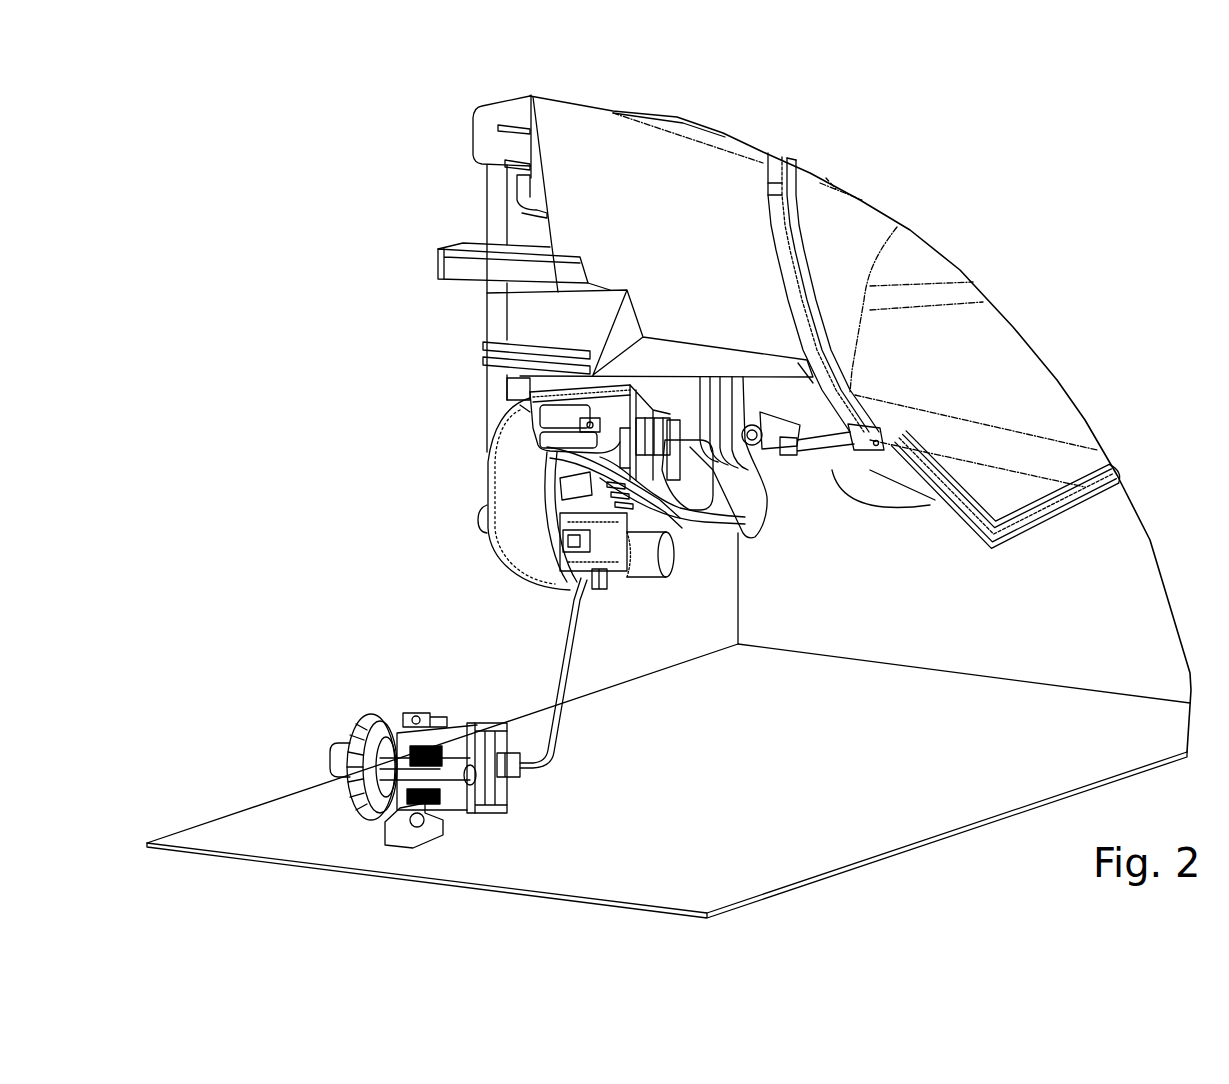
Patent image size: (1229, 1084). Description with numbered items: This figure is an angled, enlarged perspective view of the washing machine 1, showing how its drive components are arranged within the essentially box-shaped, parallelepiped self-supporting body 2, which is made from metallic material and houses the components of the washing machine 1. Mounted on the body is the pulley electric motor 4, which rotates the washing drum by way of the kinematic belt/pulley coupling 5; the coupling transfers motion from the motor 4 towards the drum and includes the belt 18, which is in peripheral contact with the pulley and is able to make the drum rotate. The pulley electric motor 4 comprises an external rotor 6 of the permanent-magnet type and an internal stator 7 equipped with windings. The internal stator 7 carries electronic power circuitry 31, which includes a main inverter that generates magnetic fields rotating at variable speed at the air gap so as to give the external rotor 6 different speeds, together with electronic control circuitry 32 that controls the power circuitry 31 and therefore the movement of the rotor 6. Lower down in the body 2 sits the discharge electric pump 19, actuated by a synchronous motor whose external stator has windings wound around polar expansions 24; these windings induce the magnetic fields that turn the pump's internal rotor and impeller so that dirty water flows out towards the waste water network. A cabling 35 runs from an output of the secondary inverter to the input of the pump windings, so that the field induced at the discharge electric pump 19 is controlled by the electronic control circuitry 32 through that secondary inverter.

The washing machine 1 is at (1000, 216).
The self-supporting body 2 is at (247, 820).
The pulley electric motor 4 is at (467, 541).
The kinematic belt/pulley coupling 5 is at (467, 392).
The external rotor 6 is at (495, 579).
The internal stator 7 is at (617, 598).
The belt 18 is at (492, 185).
The discharge electric pump 19 is at (363, 708).
The polar expansions 24 is at (427, 750).
The electronic power circuitry 31 is at (646, 588).
The electronic control circuitry 32 is at (650, 554).
The cabling 35 is at (543, 654).